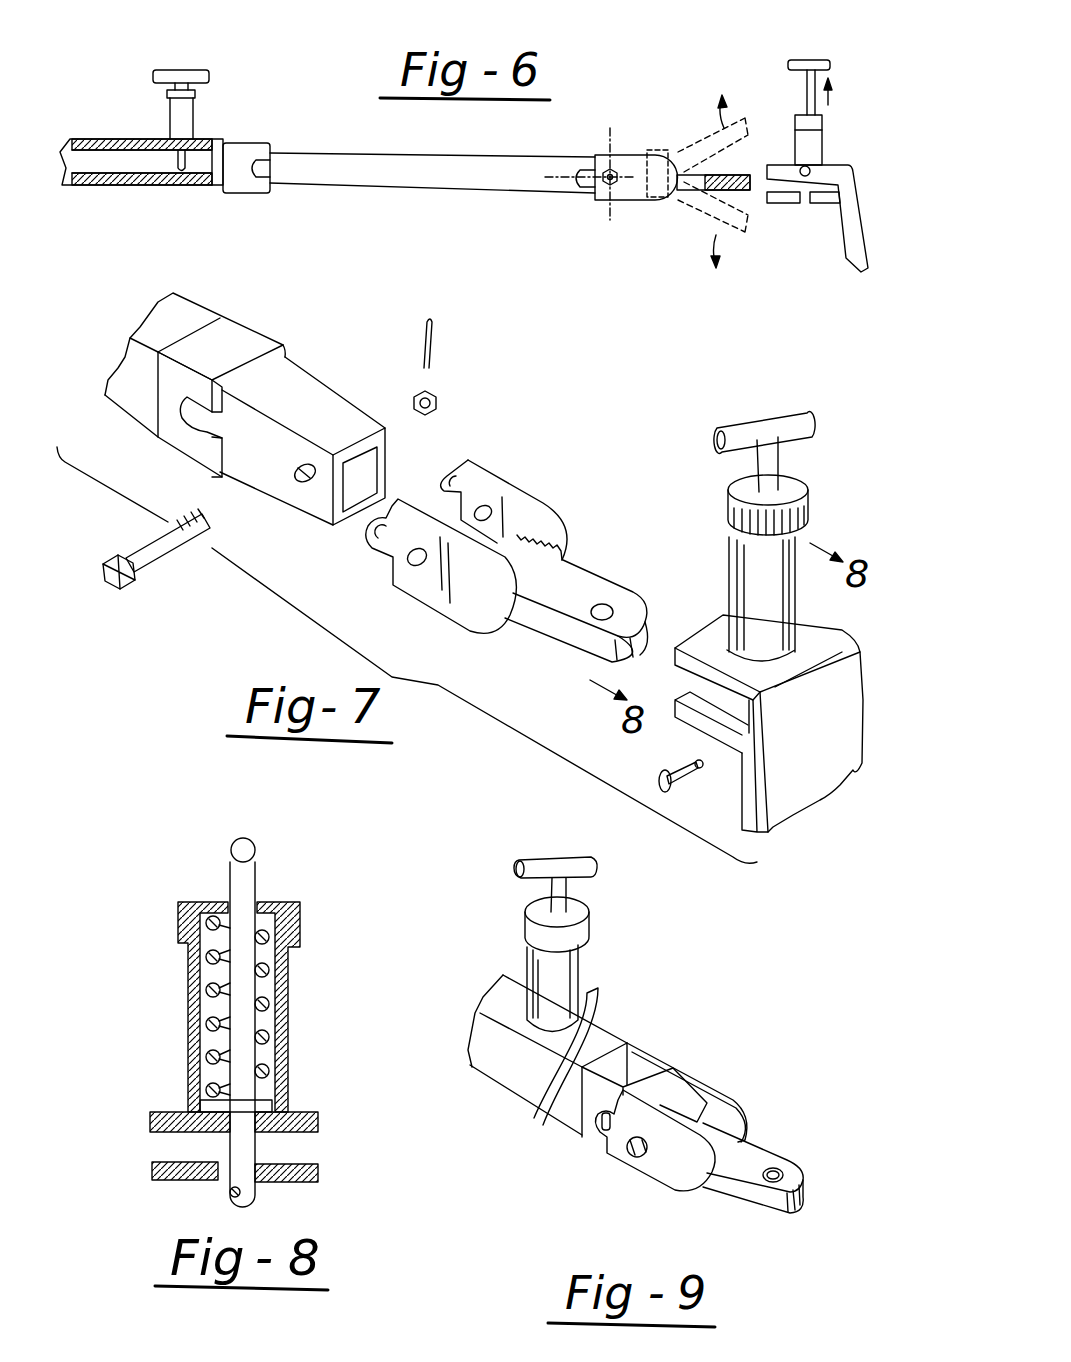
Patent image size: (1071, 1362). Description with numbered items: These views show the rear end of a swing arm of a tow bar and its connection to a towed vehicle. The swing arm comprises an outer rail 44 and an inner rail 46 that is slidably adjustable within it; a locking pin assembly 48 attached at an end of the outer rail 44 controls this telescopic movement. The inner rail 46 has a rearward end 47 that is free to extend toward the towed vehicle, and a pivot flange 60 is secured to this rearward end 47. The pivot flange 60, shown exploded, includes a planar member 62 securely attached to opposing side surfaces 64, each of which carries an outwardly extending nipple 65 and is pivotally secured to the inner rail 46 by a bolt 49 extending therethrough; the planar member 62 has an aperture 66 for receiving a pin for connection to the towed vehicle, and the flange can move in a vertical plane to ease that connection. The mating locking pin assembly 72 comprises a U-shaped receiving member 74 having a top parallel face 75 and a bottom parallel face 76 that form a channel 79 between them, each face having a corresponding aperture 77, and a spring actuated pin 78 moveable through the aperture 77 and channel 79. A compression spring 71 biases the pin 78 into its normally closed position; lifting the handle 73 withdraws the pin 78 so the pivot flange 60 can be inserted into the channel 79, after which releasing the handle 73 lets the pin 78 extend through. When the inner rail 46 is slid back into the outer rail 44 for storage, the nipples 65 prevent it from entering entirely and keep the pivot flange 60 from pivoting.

In FIG. 6, the outer rail 44 is at (120, 139).
In FIG. 9, the outer rail 44 is at (613, 1037).
In FIG. 6, the inner rail 46 is at (377, 153).
In FIG. 7, the inner rail 46 is at (365, 413).
In FIG. 6, the rearward end 47 is at (566, 157).
In FIG. 6, the locking pin assembly 48 is at (193, 70).
In FIG. 9, the locking pin assembly 48 is at (558, 858).
In FIG. 7, the bolt 49 is at (148, 573).
In FIG. 6, the pivot flange 60 is at (633, 200).
In FIG. 7, the pivot flange 60 is at (503, 528).
In FIG. 9, the pivot flange 60 is at (683, 1113).
In FIG. 7, the planar member 62 is at (585, 577).
In FIG. 7, the opposing side surfaces 64 is at (563, 527).
In FIG. 6, the nipple 65 is at (568, 188).
In FIG. 7, the nipple 65 is at (450, 472).
In FIG. 9, the nipple 65 is at (610, 1137).
In FIG. 7, the aperture 66 is at (617, 607).
In FIG. 8, the compression spring 71 is at (217, 997).
In FIG. 7, the locking pin assembly 72 is at (746, 516).
In FIG. 8, the locking pin assembly 72 is at (240, 997).
In FIG. 7, the handle 73 is at (787, 412).
In FIG. 8, the handle 73 is at (253, 845).
In FIG. 7, the U-shaped receiving member 74 is at (676, 677).
In FIG. 7, the top parallel face 75 is at (768, 713).
In FIG. 8, the top parallel face 75 is at (320, 1122).
In FIG. 7, the bottom parallel face 76 is at (693, 730).
In FIG. 8, the bottom parallel face 76 is at (318, 1172).
In FIG. 8, the aperture 77 is at (223, 1185).
In FIG. 8, the spring actuated pin 78 is at (243, 1017).
In FIG. 8, the channel 79 is at (165, 1143).